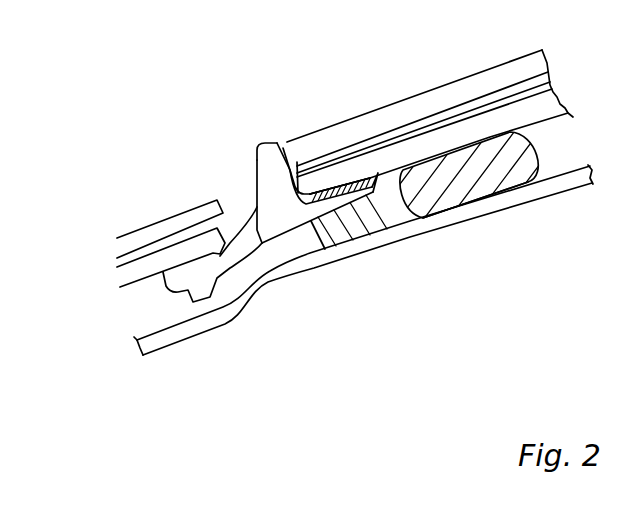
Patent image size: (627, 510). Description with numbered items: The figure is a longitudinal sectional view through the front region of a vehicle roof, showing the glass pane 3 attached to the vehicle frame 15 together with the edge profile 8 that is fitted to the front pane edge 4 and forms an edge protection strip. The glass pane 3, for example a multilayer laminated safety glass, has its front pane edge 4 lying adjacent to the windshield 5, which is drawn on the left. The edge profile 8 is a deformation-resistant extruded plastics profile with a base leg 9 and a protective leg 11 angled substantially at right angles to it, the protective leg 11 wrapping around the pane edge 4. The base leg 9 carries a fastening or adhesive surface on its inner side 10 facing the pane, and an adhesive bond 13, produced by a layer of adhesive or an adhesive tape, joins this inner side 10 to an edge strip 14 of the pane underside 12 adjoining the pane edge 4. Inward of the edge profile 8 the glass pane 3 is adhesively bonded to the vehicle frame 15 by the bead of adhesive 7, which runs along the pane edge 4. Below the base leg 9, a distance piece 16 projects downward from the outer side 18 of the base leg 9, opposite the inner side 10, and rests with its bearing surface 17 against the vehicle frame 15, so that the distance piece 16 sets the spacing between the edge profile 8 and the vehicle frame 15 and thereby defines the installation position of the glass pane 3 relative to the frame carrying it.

The glass pane 3 is at (401, 100).
The front pane edge 4 is at (262, 226).
The windshield 5 is at (122, 232).
The bead of adhesive 7 is at (480, 173).
The edge profile 8 is at (247, 175).
The base leg 9 is at (335, 208).
The inner side of the base leg 10 is at (351, 176).
The protective leg 11 is at (273, 187).
The pane underside 12 is at (390, 180).
The adhesive bond 13 is at (335, 190).
The edge strip 14 is at (313, 198).
The vehicle frame 15 is at (455, 217).
The distance piece 16 is at (357, 230).
The bearing surface 17 is at (329, 255).
The outer side of the base leg 18 is at (290, 240).